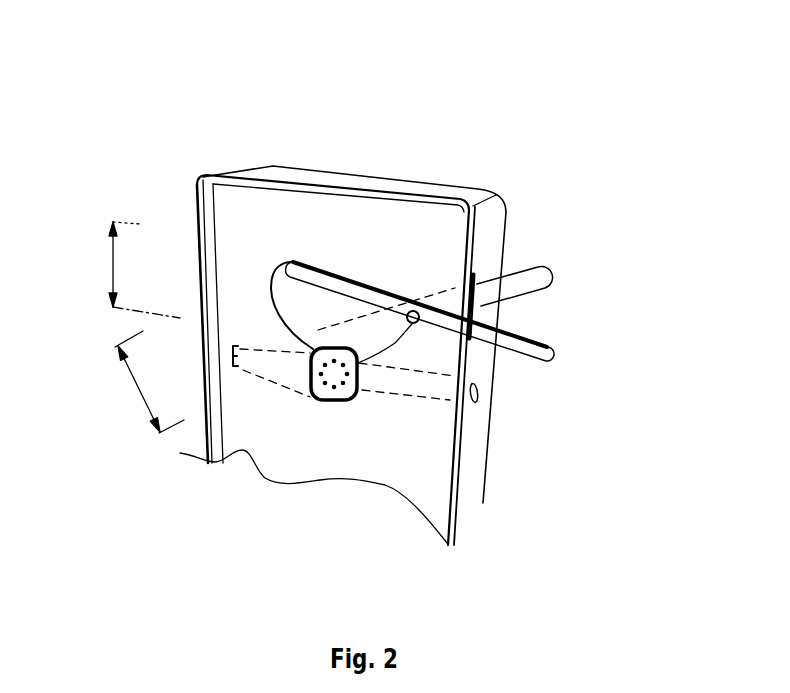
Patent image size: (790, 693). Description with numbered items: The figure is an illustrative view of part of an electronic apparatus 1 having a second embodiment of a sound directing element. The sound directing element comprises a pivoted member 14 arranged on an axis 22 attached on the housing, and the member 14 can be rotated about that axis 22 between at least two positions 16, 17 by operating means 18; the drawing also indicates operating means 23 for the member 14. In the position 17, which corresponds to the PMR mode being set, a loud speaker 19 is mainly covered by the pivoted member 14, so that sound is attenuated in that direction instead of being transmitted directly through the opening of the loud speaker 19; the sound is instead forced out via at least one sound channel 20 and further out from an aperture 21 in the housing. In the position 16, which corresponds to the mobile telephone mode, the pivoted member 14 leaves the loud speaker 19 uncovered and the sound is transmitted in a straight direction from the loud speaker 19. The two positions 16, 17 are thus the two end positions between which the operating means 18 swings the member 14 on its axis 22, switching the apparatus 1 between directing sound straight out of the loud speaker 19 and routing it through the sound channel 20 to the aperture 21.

The clamping device 1 is at (577, 51).
The pivoted member 14 is at (312, 282).
The position 16 is at (113, 266).
The position 17 is at (137, 391).
The operating means 18 is at (540, 287).
The loud speaker 19 is at (350, 400).
The sound channel 20 is at (252, 367).
The aperture 21 is at (232, 352).
The axis 22 is at (413, 310).
The operating means 23 is at (462, 293).